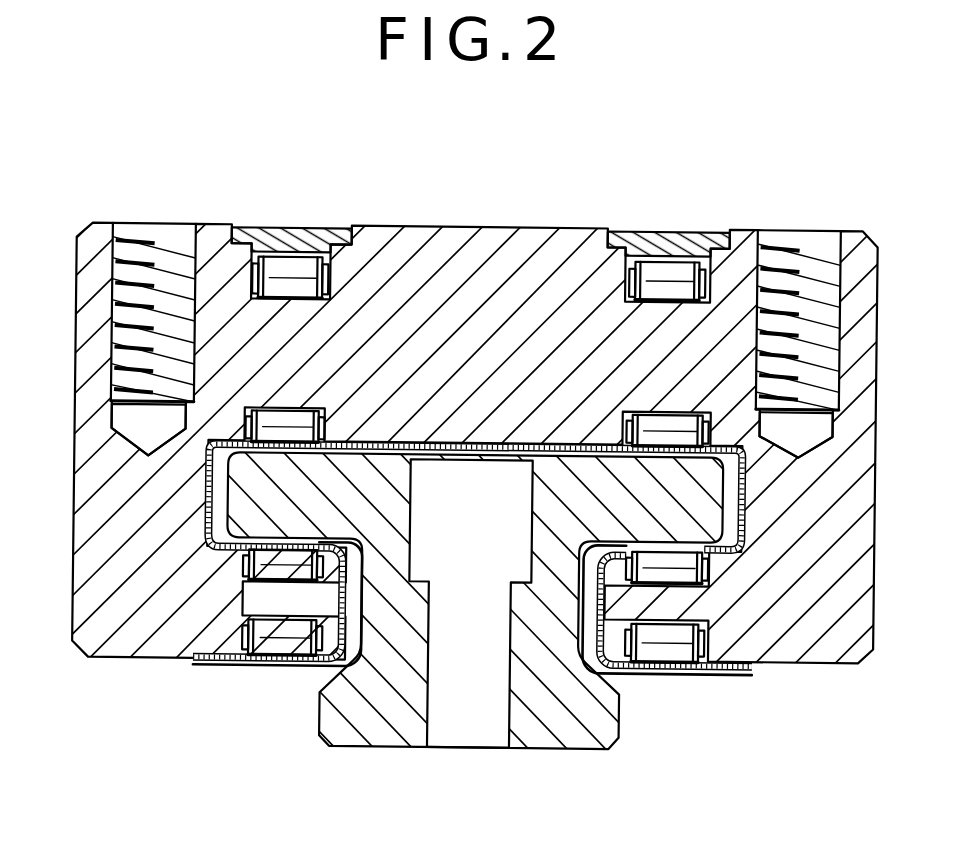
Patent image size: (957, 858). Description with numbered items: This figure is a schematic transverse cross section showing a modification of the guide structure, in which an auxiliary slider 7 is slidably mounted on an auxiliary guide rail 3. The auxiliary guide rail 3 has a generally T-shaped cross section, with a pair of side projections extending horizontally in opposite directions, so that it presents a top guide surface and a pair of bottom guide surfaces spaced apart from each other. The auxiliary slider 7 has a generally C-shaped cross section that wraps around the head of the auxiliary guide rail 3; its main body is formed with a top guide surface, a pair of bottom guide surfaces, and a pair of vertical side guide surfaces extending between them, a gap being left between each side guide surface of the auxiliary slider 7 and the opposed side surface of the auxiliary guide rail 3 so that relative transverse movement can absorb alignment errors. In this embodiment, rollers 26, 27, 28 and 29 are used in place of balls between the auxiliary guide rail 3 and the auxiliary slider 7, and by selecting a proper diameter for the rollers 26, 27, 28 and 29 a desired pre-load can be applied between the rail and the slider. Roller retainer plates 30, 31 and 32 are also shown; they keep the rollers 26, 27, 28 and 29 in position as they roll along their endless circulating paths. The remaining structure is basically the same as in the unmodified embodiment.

The auxiliary guide rail 3 is at (576, 729).
The auxiliary slider 7 is at (538, 240).
The roller 26 is at (272, 413).
The roller 27 is at (681, 430).
The roller 28 is at (261, 580).
The roller 29 is at (676, 570).
The roller retainer plate 30 is at (285, 670).
The roller retainer plate 31 is at (207, 493).
The roller retainer plate 32 is at (487, 443).